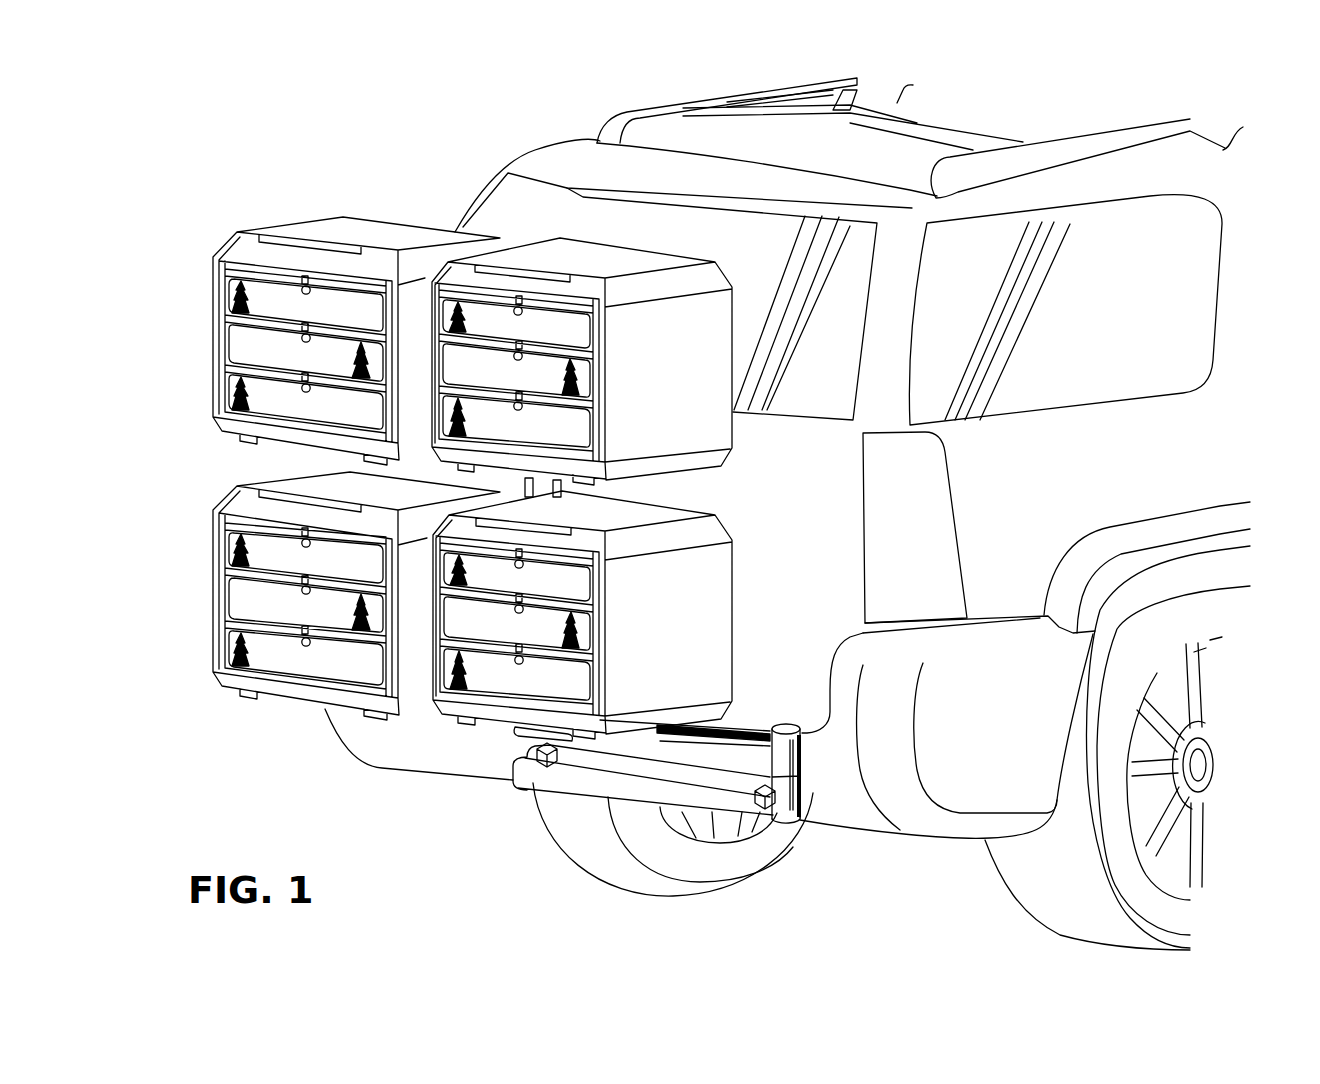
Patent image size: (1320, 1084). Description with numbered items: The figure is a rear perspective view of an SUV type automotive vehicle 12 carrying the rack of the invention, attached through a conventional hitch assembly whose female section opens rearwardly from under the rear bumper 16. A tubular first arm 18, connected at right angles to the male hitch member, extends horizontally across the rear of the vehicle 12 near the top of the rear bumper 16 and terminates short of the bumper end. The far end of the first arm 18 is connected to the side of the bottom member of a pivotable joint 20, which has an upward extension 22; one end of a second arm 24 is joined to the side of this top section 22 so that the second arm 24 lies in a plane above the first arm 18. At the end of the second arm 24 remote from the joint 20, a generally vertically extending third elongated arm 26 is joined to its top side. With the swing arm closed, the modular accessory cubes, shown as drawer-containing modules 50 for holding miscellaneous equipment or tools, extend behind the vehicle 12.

The automotive vehicle 12 is at (528, 149).
The rear bumper 16 is at (433, 760).
The first arm 18 is at (600, 786).
The pivotable joint 20 is at (800, 795).
The upward extension 22 is at (800, 760).
The second arm 24 is at (743, 722).
The third elongated arm 26 is at (547, 488).
The module 50 is at (209, 313).